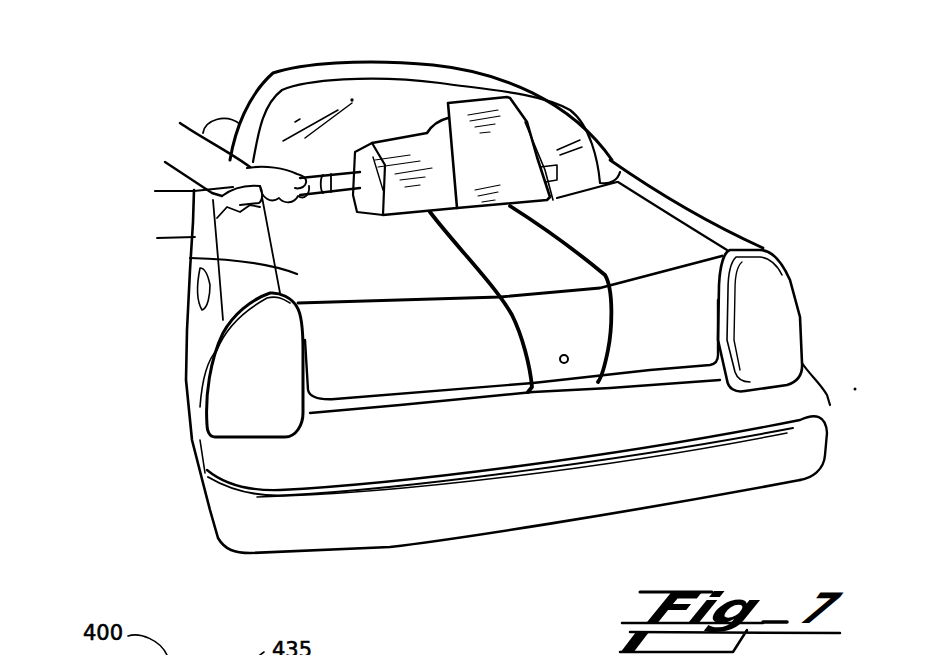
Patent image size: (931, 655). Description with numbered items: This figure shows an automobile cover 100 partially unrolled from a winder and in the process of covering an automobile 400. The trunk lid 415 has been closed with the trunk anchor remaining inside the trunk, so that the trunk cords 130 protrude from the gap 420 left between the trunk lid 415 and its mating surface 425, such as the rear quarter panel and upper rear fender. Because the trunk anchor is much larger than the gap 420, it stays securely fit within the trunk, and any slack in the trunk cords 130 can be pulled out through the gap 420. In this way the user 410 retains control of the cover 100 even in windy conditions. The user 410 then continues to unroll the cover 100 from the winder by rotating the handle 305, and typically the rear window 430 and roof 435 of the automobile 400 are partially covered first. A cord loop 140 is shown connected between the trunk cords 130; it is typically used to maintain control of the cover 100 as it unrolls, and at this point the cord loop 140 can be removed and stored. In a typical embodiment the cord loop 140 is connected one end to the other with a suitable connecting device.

The automobile 400 is at (653, 120).
The user 410 is at (178, 121).
The trunk lid 415 is at (195, 258).
The gap 420 is at (672, 210).
The mating surface 425 is at (197, 360).
The rear window 430 is at (552, 112).
The roof 435 is at (367, 63).
The handle 305 is at (323, 203).
The cord loop 140 is at (487, 208).
The trunk cords 130 is at (525, 352).
The automobile cover 100 is at (420, 654).